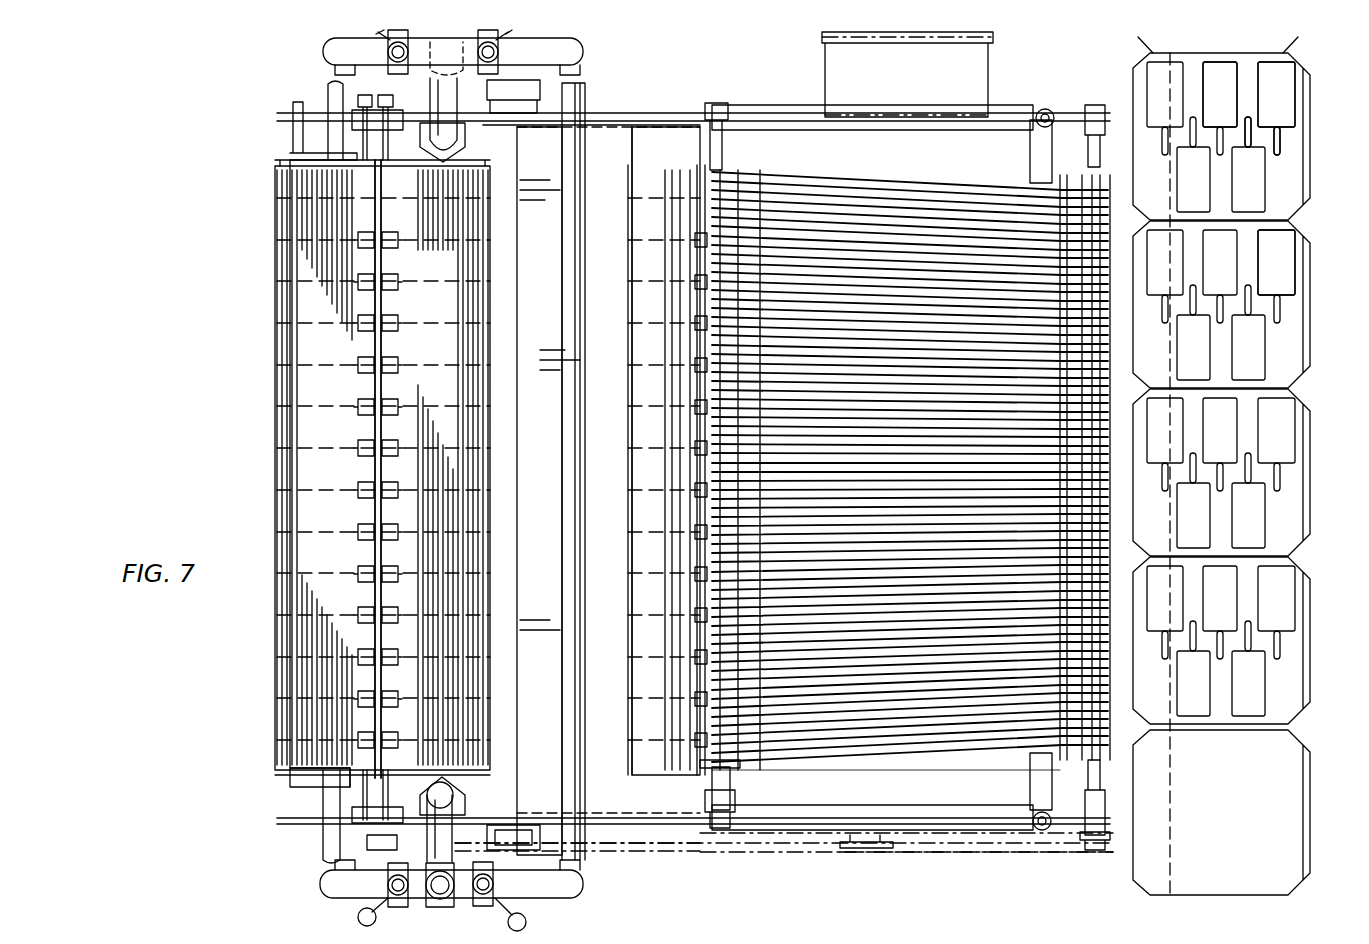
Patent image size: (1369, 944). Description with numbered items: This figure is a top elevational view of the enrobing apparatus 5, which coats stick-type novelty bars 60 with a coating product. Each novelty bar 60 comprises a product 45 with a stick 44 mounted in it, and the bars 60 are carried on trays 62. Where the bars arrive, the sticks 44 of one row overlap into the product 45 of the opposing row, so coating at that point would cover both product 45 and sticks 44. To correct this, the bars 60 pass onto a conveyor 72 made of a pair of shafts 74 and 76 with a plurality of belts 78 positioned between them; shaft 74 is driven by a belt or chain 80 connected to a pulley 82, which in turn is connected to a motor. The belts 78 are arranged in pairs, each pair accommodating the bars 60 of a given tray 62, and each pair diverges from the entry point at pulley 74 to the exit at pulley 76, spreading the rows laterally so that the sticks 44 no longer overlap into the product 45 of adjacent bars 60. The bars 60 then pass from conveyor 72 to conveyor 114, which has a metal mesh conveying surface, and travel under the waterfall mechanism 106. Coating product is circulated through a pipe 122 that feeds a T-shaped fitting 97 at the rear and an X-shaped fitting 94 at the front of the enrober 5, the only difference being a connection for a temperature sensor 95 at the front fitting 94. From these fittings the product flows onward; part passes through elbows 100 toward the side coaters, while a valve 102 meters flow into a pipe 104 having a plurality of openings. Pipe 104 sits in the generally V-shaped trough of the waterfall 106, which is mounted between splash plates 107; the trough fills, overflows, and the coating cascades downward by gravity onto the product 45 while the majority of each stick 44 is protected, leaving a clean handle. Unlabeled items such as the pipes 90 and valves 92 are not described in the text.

The enrobing apparatus 5 is at (249, 493).
The sticks 44 is at (1247, 113).
The product 45 is at (1293, 260).
The novelty bars 60 is at (1270, 70).
The trays 62 is at (1305, 505).
The conveyor 72 is at (825, 803).
The shaft 74 is at (1088, 802).
The shaft 76 is at (735, 802).
The belts 78 is at (905, 188).
The belt or chain 80 is at (955, 850).
The pulley 82 is at (848, 850).
The pipe 90 is at (325, 97).
The valve 92 is at (330, 43).
The X-shaped fitting 94 is at (465, 875).
The temperature sensor 95 is at (577, 836).
The T-shaped fitting 97 is at (455, 60).
The elbows 100 is at (585, 55).
The valve 102 is at (575, 38).
The pipe 104 is at (565, 720).
The waterfall mechanism 106 is at (560, 662).
The splash plates 107 is at (608, 118).
The conveyor 114 is at (652, 170).
The pipe 122 is at (455, 135).